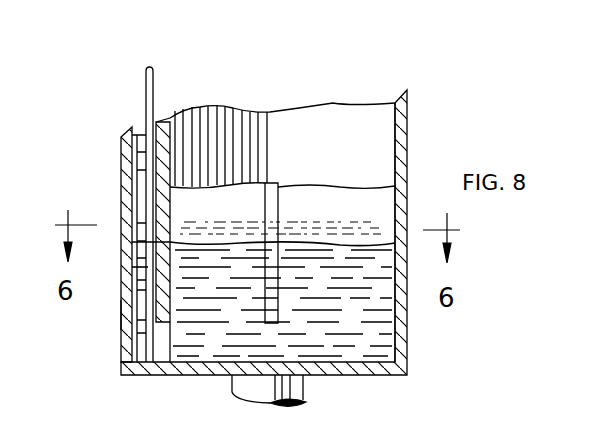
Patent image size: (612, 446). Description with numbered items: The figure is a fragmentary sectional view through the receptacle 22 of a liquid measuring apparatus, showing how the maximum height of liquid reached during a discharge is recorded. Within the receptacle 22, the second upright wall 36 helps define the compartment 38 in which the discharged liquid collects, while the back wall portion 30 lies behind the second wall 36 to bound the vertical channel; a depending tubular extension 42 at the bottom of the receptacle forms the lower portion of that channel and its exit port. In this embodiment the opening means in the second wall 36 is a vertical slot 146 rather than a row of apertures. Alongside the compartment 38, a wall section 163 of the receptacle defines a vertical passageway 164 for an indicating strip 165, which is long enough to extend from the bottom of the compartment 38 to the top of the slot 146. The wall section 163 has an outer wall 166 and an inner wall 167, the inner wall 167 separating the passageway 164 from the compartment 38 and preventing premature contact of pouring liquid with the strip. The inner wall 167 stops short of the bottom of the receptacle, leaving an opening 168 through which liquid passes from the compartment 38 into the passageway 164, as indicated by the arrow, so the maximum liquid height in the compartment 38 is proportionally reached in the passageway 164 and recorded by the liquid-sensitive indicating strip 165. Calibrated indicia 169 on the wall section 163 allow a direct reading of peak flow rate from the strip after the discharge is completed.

The receptacle 22 is at (407, 126).
The back wall portion 30 is at (348, 112).
The second upright wall 36 is at (290, 197).
The compartment 38 is at (380, 341).
The depending tubular extension 42 is at (305, 388).
The vertical slot 146 is at (272, 223).
The wall section 163 is at (120, 313).
The vertical passageway 164 is at (143, 150).
The indicating strip 165 is at (155, 86).
The outer wall 166 is at (120, 157).
The inner wall 167 is at (175, 135).
The opening 168 is at (157, 331).
The calibrated indicia 169 is at (140, 246).